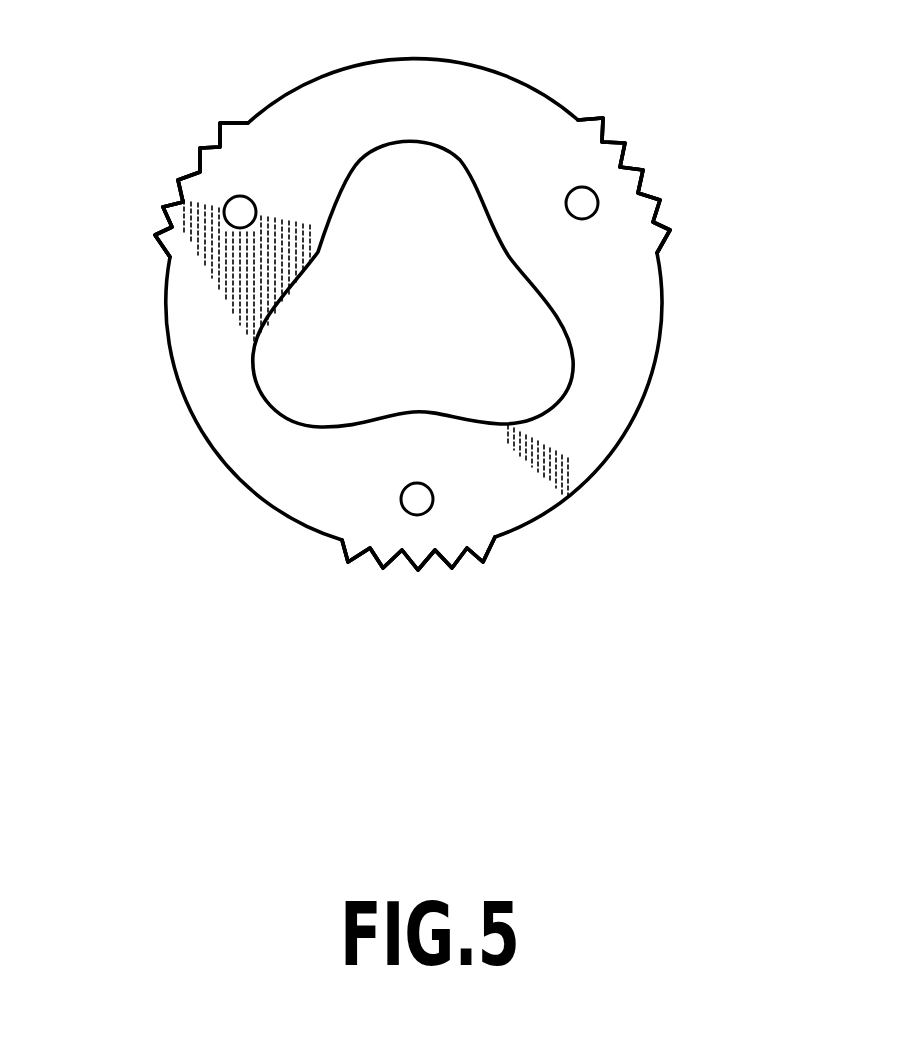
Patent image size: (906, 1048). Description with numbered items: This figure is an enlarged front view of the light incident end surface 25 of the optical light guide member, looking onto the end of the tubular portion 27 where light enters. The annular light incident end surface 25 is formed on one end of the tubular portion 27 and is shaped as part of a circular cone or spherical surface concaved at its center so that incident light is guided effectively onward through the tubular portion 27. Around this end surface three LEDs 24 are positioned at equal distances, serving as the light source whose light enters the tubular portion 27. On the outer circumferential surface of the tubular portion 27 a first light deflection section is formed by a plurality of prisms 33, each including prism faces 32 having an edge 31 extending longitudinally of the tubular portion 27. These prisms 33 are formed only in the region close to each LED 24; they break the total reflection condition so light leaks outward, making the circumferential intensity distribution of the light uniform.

The LED 24 is at (250, 197).
The light incident end surface 25 is at (231, 410).
The tubular portion 27 is at (638, 417).
The edge 31 is at (625, 145).
The prism face 32 is at (218, 145).
The prism 33 is at (152, 117).